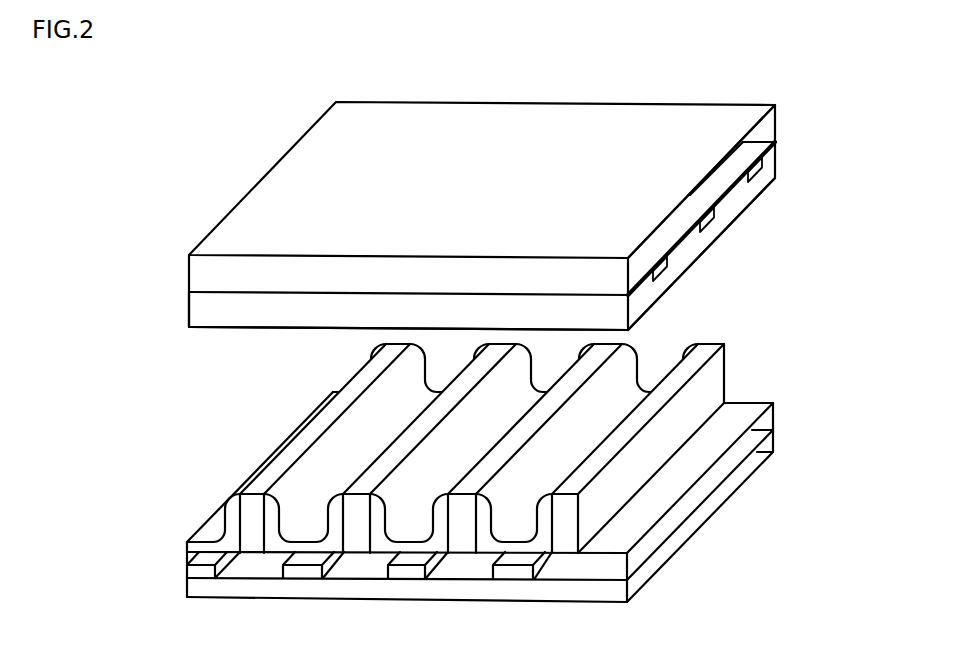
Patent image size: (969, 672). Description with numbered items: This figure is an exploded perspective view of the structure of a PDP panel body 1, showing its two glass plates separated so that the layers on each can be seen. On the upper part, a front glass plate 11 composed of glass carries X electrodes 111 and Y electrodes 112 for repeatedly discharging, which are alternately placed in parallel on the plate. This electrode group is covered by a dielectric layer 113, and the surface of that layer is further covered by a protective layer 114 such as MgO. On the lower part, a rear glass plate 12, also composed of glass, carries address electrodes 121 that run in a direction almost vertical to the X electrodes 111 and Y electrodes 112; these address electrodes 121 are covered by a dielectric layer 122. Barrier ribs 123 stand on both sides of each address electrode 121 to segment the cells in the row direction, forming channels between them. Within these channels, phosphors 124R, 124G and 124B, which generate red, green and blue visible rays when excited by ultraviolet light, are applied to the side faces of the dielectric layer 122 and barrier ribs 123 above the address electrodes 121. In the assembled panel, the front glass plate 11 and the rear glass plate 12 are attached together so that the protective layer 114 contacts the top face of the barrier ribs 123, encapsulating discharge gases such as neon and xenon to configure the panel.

The PDP panel body 1 is at (822, 418).
The front glass plate 11 is at (278, 205).
The X electrodes 111 is at (757, 183).
The Y electrodes 112 is at (702, 232).
The dielectric layer 113 is at (725, 208).
The protective layer 114 is at (213, 332).
The rear glass plate 12 is at (222, 587).
The address electrodes 121 is at (297, 570).
The dielectric layer 122 is at (605, 570).
The barrier ribs 123 is at (568, 533).
The phosphor 124R is at (271, 540).
The phosphor 124G is at (377, 543).
The phosphor 124B is at (540, 540).